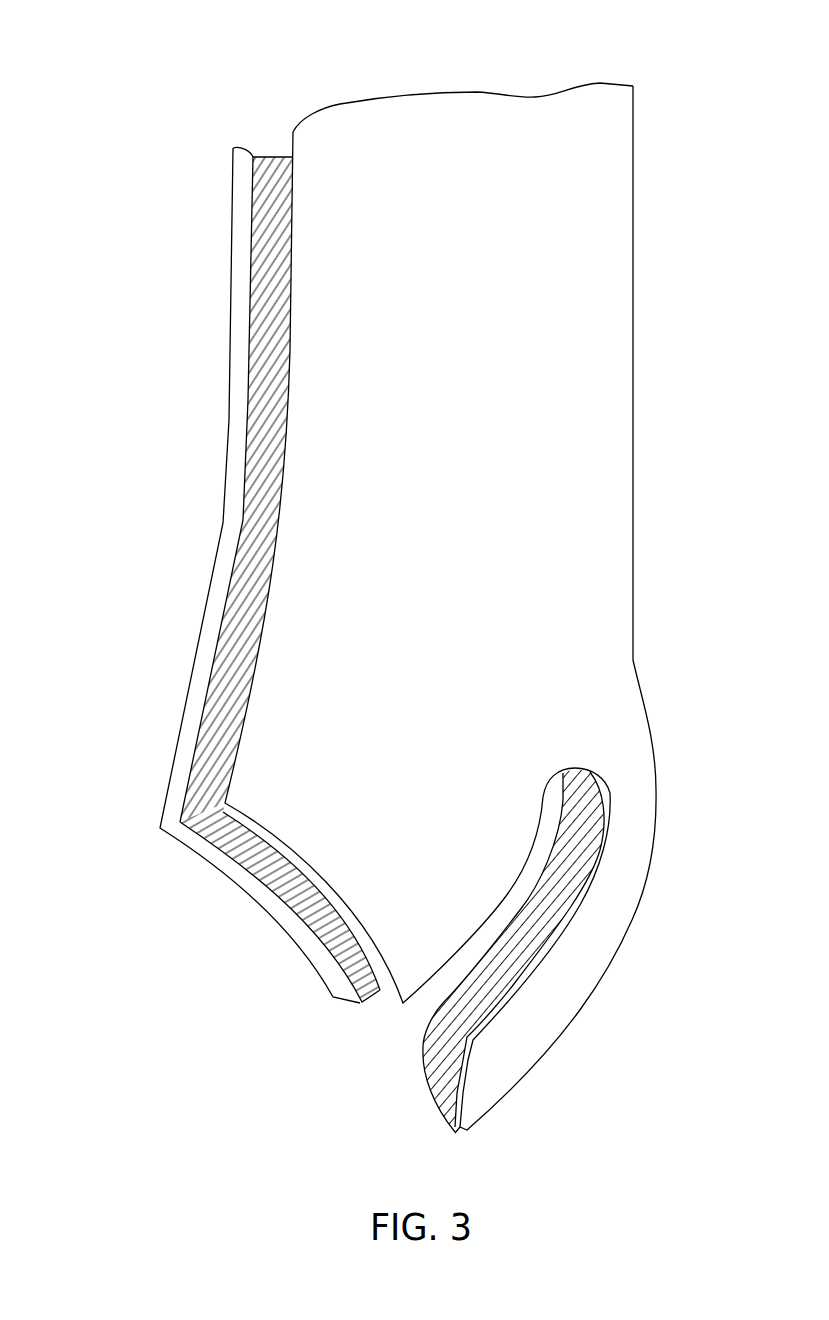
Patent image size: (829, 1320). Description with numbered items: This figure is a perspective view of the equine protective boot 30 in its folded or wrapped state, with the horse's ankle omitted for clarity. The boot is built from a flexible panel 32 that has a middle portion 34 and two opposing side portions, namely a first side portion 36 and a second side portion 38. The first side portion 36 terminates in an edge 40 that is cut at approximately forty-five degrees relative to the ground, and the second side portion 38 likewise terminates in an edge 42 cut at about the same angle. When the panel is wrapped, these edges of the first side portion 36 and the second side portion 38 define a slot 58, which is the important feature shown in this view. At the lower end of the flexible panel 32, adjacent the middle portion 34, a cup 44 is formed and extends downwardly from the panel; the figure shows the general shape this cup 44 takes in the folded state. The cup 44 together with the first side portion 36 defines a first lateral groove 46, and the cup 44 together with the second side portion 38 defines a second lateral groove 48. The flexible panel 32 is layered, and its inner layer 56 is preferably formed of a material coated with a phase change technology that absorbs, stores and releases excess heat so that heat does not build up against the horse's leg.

The equine protective boot 30 is at (136, 62).
The flexible panel 32 is at (484, 88).
The middle portion 34 is at (634, 236).
The first side portion 36 is at (500, 362).
The second side portion 38 is at (210, 576).
The edge 40 is at (323, 880).
The edge 42 is at (243, 882).
The cup 44 is at (623, 935).
The first lateral groove 46 is at (470, 943).
The second lateral groove 48 is at (427, 1042).
The inner layer 56 is at (278, 177).
The slot 58 is at (290, 340).